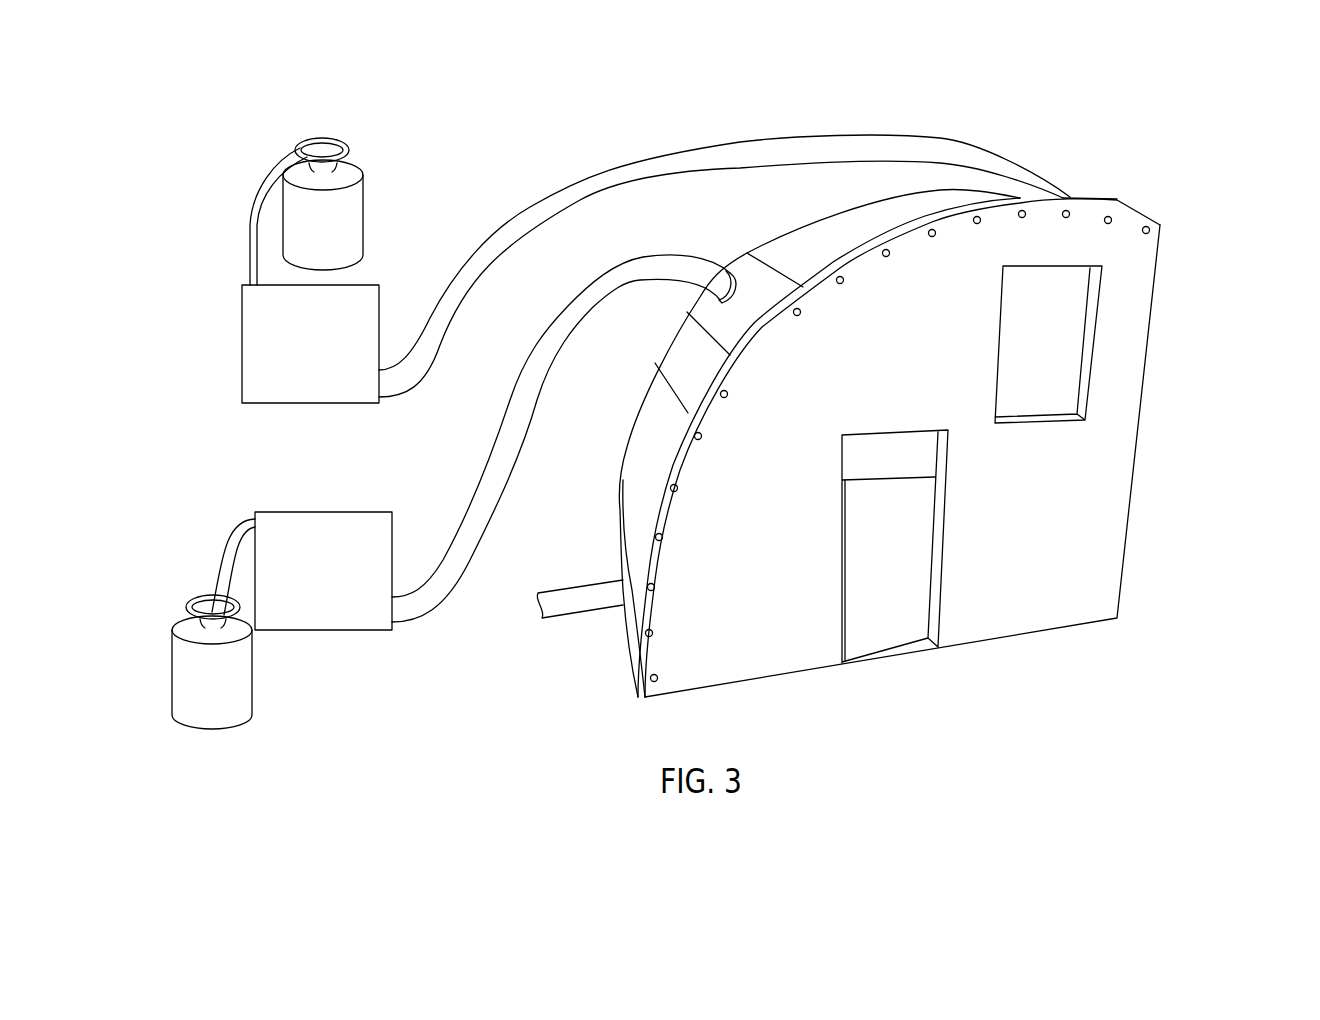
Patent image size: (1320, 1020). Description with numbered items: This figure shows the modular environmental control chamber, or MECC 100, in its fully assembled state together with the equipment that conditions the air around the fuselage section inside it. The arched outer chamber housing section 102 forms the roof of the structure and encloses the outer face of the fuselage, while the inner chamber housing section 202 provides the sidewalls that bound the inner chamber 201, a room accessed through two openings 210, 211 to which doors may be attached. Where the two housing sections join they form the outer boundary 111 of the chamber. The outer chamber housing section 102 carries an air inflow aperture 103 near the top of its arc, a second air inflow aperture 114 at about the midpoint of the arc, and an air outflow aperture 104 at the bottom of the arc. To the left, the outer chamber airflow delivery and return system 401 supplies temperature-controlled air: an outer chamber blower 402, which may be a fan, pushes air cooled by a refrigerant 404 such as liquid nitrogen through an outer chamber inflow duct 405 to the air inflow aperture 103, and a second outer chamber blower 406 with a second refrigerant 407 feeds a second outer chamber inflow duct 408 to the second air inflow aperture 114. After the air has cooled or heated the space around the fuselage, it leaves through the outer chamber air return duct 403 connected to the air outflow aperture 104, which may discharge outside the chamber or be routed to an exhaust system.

The modular environmental control chamber (MECC) 100 is at (1205, 162).
The outer chamber housing section 102 is at (818, 240).
The air inflow aperture 103 is at (1075, 197).
The air outflow aperture 104 is at (632, 593).
The outer boundary 111 is at (775, 232).
The second air inflow aperture 114 is at (718, 285).
The inner chamber 201 is at (903, 608).
The inner chamber housing section 202 is at (1130, 350).
The opening 210 is at (860, 433).
The opening 211 is at (1000, 310).
The outer chamber airflow delivery and return system 401 is at (253, 432).
The outer chamber blower 402 is at (296, 403).
The outer chamber air return duct 403 is at (572, 585).
The refrigerant 404 is at (344, 143).
The outer chamber inflow duct 405 is at (745, 142).
The second outer chamber blower 406 is at (350, 508).
The second refrigerant 407 is at (252, 684).
The second outer chamber inflow duct 408 is at (607, 270).